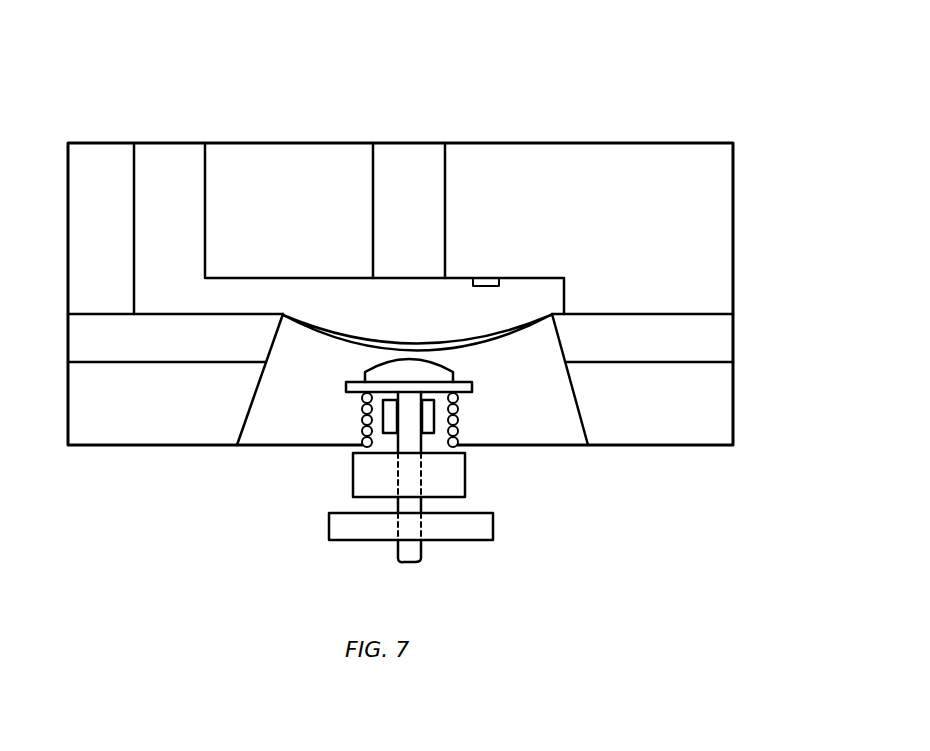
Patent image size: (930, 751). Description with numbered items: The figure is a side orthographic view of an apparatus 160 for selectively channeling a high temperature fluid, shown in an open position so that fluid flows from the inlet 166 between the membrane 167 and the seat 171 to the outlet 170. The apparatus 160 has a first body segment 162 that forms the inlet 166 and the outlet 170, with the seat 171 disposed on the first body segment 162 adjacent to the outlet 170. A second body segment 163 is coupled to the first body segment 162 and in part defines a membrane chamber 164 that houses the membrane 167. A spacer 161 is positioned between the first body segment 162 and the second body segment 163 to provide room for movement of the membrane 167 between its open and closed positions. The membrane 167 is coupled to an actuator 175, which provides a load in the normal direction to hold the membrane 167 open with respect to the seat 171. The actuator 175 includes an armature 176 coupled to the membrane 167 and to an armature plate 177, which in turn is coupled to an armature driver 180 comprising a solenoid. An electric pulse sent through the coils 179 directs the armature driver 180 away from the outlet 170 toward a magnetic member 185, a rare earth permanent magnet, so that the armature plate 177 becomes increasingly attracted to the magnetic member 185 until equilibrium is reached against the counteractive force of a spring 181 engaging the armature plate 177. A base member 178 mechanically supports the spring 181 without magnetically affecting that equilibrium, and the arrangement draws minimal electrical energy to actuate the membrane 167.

The apparatus 160 is at (752, 84).
The spacer 161 is at (91, 352).
The first body segment 162 is at (531, 155).
The second body segment 163 is at (91, 435).
The membrane chamber 164 is at (272, 438).
The inlet 166 is at (147, 202).
The membrane 167 is at (300, 317).
The outlet 170 is at (384, 202).
The seat 171 is at (485, 277).
The actuator 175 is at (308, 472).
The armature 176 is at (370, 377).
The armature plate 177 is at (470, 389).
The base member 178 is at (457, 480).
The coils 179 is at (388, 418).
The armature driver 180 is at (413, 423).
The spring 181 is at (362, 435).
The magnetic member 185 is at (477, 527).